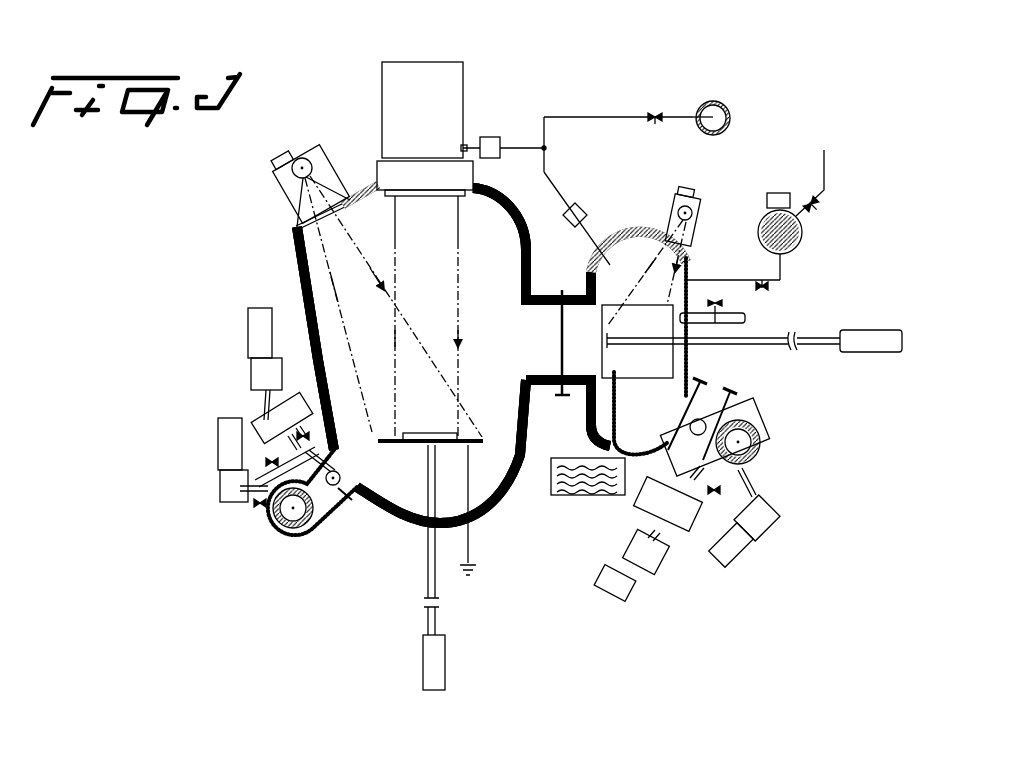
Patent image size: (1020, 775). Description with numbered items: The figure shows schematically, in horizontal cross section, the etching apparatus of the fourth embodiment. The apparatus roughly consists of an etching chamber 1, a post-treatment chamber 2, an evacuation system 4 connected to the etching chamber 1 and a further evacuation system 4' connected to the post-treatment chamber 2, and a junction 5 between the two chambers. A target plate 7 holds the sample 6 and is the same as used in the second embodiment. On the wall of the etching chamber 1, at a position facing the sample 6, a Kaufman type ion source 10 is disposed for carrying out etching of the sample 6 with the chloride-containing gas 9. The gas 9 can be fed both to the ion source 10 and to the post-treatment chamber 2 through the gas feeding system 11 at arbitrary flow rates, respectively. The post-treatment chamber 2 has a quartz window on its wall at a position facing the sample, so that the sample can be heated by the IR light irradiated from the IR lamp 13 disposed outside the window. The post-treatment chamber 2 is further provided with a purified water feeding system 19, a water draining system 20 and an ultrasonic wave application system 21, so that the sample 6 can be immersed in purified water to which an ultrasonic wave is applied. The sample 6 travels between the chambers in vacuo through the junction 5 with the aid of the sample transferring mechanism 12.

The etching chamber 1 is at (292, 256).
The post-treatment chamber 2 is at (637, 228).
The evacuation system 4 is at (279, 452).
The evacuation system 4' is at (720, 489).
The junction 5 is at (553, 388).
The sample 6 is at (377, 507).
The target plate 7 is at (343, 508).
The chloride-containing gas 9 is at (730, 112).
The Kaufman type ion source 10 is at (383, 62).
The gas feeding system 11 is at (495, 137).
The sample transferring mechanism 12 is at (850, 347).
The IR lamp 13 is at (279, 191).
The purified water feeding system 19 is at (797, 242).
The water draining system 20 is at (745, 315).
The ultrasonic wave application system 21 is at (568, 500).